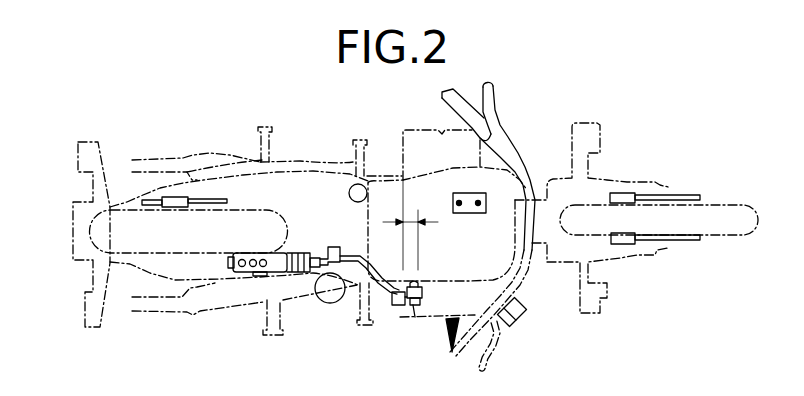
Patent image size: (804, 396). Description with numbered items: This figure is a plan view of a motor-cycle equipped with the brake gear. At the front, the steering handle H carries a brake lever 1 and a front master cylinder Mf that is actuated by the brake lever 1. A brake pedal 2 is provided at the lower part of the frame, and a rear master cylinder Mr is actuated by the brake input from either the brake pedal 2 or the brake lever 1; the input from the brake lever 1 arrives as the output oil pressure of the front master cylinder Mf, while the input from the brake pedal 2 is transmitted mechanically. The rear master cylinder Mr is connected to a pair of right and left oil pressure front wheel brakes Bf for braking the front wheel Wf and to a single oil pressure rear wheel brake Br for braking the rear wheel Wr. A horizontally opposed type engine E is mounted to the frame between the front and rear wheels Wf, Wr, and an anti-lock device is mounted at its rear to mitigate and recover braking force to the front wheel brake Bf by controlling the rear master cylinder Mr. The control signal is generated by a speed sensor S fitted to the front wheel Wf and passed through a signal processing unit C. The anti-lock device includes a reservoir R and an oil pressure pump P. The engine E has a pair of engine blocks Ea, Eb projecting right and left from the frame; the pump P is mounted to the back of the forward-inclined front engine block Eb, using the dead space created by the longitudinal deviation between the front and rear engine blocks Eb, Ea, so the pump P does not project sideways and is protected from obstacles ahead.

The rear wheel Wr is at (90, 235).
The rear wheel brake Br is at (173, 207).
The rear master cylinder Mr is at (278, 253).
The reservoir R is at (327, 297).
The brake pedal 2 is at (383, 298).
The oil pressure pump P is at (398, 305).
The distribution valve D is at (416, 318).
The speed sensor S is at (448, 338).
The front engine block Eb is at (452, 355).
The brake lever 1 is at (488, 357).
The front master cylinder Mf is at (518, 318).
The steering handle H is at (530, 258).
The signal processing unit C is at (469, 213).
The engine E is at (418, 128).
The rear engine block Ea is at (403, 150).
The front wheel brake Bf is at (620, 198).
The front wheel Wf is at (707, 204).